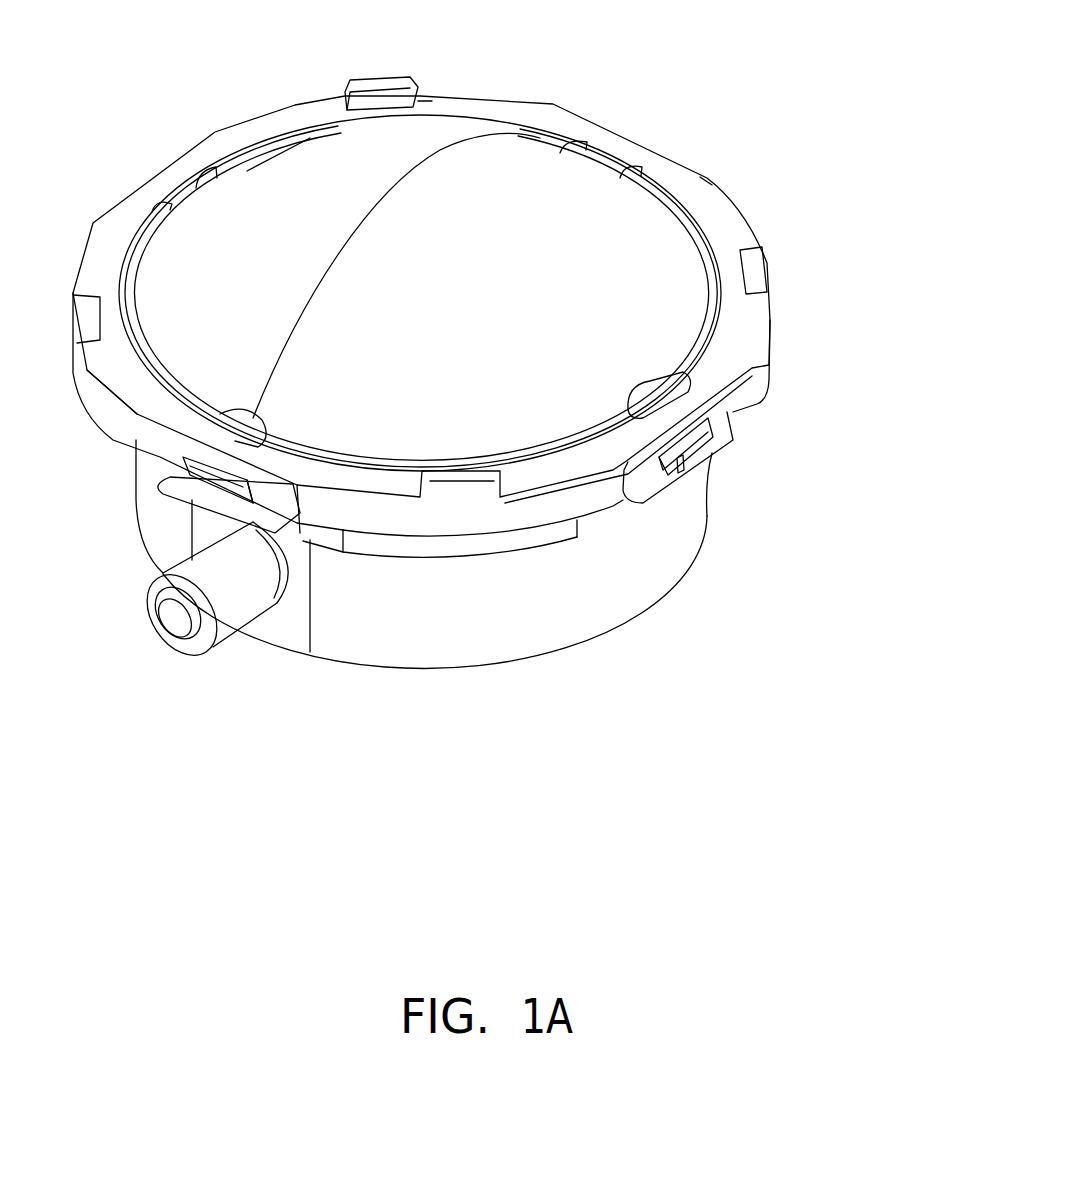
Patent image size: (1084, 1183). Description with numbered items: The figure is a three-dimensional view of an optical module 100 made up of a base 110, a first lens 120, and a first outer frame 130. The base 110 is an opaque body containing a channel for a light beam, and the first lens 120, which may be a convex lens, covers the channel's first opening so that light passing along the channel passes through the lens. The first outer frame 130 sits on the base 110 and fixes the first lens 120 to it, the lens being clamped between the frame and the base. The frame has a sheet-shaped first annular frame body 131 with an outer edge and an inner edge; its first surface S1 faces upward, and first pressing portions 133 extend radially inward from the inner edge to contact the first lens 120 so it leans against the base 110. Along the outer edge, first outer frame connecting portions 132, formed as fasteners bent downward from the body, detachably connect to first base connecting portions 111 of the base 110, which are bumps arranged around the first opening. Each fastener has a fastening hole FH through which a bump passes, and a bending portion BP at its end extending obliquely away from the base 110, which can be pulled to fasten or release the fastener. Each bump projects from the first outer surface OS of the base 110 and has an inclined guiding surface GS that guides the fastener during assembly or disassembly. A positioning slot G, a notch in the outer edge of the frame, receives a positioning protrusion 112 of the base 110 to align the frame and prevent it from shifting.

The optical module 100 is at (837, 841).
The base 110 is at (528, 617).
The first base connecting portion 111 is at (707, 517).
The positioning protrusion 112 is at (380, 90).
The first lens 120 is at (530, 175).
The first outer frame 130 is at (897, 284).
The first annular frame body 131 is at (747, 317).
The first outer frame connecting portion 132 is at (730, 432).
The first pressing portion 133 is at (700, 357).
The positioning slot G is at (418, 101).
The first surface S1 is at (713, 220).
The bending portion BP is at (713, 452).
The fastening hole FH is at (680, 480).
The guiding surface GS is at (183, 472).
The first outer surface OS is at (260, 478).